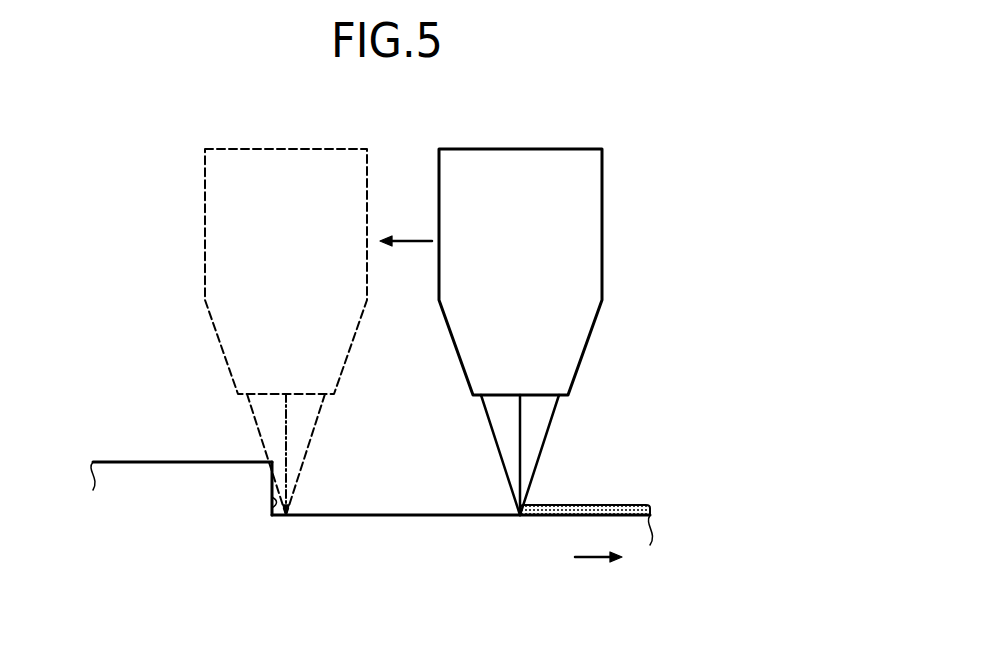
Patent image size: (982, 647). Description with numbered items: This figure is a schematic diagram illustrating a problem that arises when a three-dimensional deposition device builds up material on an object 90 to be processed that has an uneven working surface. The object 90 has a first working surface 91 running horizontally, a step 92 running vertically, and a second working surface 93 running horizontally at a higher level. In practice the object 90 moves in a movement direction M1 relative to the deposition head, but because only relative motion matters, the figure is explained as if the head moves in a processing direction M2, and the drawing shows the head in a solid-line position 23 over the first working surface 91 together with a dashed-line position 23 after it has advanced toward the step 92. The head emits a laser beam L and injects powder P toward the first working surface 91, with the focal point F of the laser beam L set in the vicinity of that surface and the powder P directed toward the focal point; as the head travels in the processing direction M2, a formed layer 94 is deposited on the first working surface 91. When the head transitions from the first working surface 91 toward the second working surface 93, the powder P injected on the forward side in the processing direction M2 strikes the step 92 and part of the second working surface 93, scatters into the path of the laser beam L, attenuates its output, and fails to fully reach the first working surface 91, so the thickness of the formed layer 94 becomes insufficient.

The laser processing head (nozzle) 23 is at (582, 146).
The object to be processed 90 is at (372, 503).
The first working surface 91 is at (456, 508).
The step 92 is at (272, 507).
The second working surface 93 is at (112, 462).
The formed layer 94 is at (637, 505).
The powder P is at (498, 447).
The laser beam L is at (522, 420).
The focal point F is at (519, 517).
The movement direction M1 is at (595, 560).
The processing direction M2 is at (405, 243).